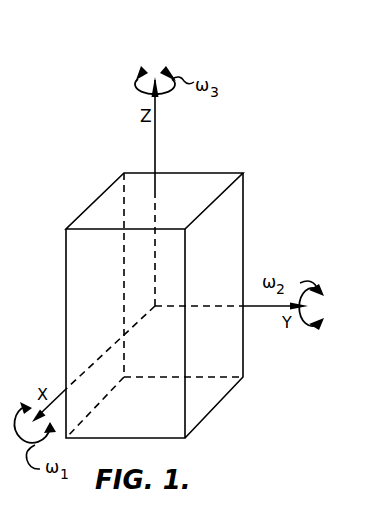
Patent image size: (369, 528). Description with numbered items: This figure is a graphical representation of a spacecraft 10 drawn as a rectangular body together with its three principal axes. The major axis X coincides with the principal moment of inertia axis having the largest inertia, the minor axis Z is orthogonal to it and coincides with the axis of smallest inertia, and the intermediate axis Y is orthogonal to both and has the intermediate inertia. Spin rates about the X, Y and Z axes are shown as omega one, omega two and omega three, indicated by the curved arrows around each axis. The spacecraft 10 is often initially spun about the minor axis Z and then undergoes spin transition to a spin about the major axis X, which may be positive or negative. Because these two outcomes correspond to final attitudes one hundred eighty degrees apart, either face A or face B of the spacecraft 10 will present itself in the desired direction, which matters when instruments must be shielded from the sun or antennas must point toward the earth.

The spacecraft 10 is at (209, 176).
The face A is at (84, 270).
The face B is at (220, 242).